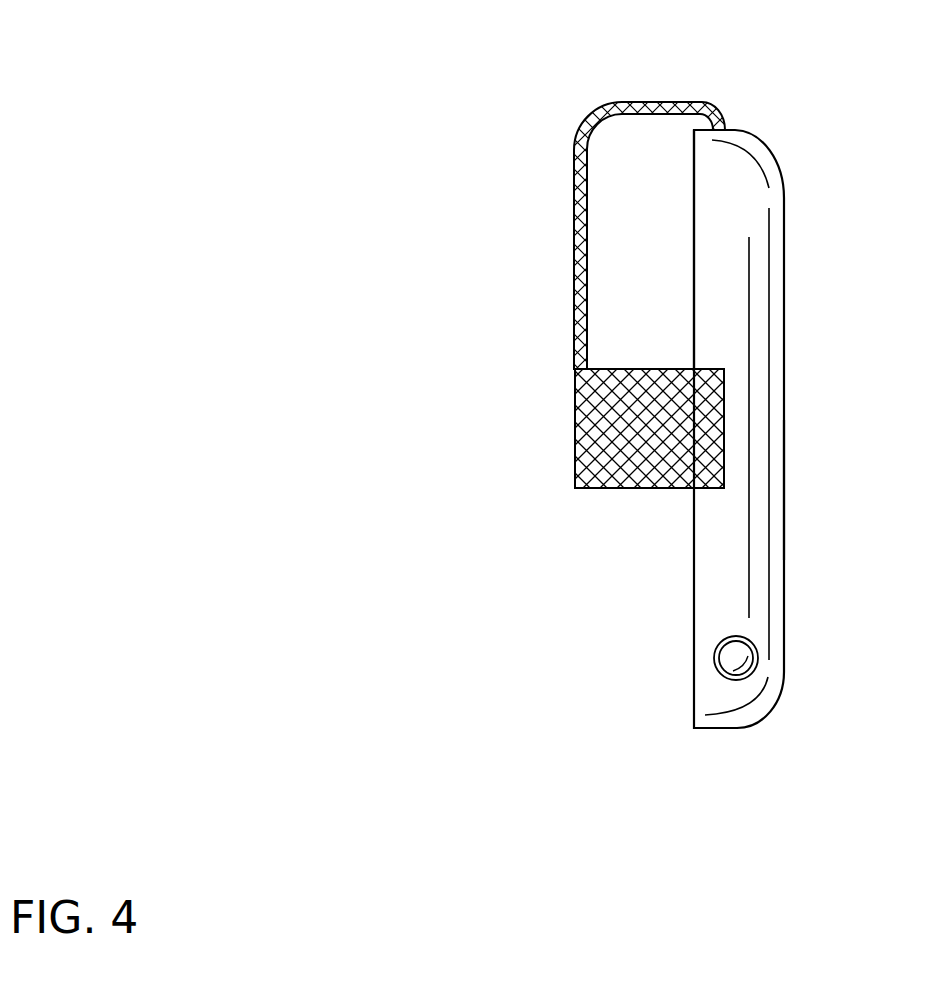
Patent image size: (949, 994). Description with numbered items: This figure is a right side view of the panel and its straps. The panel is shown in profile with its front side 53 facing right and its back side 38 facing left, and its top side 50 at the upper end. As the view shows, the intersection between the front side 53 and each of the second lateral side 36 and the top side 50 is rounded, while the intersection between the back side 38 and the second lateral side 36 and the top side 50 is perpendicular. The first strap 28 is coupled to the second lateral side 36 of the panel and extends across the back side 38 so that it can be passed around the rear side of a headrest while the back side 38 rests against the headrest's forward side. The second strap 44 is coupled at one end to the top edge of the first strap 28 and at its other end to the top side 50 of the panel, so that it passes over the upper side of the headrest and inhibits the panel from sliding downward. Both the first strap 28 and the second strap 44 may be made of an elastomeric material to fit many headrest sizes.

The second strap 44 is at (575, 178).
The top side 50 is at (739, 130).
The back side 38 is at (692, 270).
The second lateral side 36 is at (750, 312).
The first strap 28 is at (626, 470).
The front side 53 is at (787, 494).